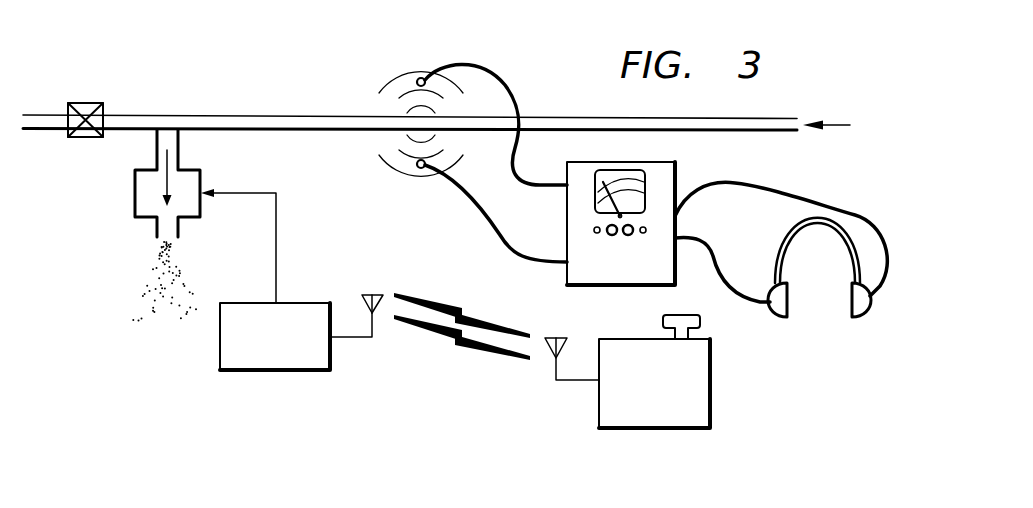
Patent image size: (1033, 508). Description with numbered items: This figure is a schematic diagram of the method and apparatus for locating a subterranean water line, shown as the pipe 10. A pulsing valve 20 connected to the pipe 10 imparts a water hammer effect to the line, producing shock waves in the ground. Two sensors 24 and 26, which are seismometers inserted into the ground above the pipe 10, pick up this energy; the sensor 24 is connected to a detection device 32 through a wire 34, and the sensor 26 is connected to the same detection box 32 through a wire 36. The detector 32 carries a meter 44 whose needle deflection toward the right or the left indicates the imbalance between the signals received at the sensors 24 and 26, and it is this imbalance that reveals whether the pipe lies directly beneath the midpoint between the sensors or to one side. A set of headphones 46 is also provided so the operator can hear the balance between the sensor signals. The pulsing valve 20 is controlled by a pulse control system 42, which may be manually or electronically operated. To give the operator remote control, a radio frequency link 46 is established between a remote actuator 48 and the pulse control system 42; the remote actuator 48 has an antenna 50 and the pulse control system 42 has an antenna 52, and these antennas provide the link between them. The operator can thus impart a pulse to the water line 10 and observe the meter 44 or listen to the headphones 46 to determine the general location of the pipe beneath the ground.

The pipe 10 is at (305, 117).
The pulsing valve 20 is at (135, 205).
The sensor 24 is at (452, 63).
The sensor 26 is at (460, 186).
The detection device 32 is at (628, 219).
The wire 34 is at (500, 70).
The wire 36 is at (505, 249).
The pulse control system 42 is at (272, 371).
The meter 44 is at (597, 206).
The headphones 46 is at (778, 240).
The remote actuator 48 is at (656, 429).
The antenna 50 is at (570, 384).
The antenna 52 is at (372, 294).